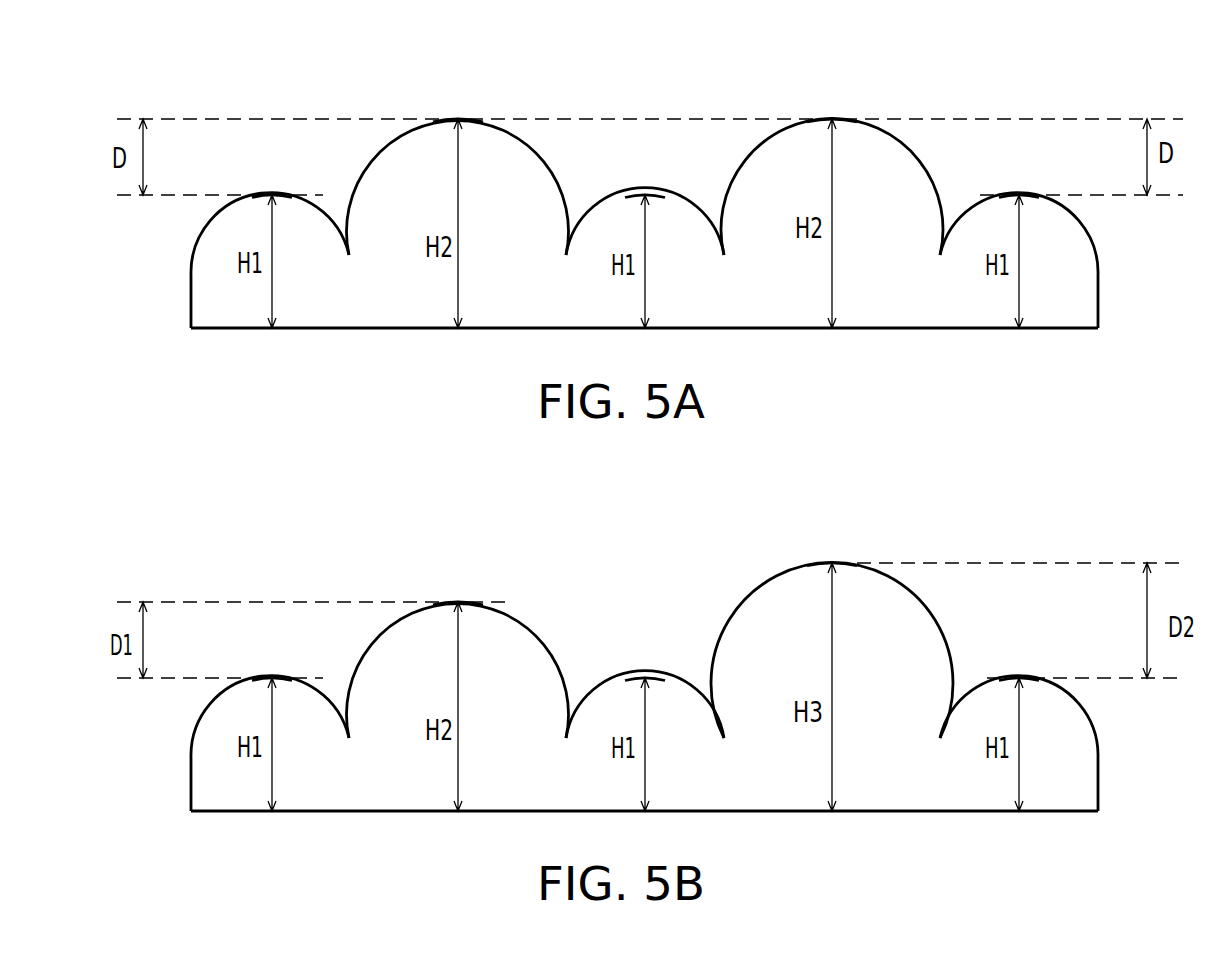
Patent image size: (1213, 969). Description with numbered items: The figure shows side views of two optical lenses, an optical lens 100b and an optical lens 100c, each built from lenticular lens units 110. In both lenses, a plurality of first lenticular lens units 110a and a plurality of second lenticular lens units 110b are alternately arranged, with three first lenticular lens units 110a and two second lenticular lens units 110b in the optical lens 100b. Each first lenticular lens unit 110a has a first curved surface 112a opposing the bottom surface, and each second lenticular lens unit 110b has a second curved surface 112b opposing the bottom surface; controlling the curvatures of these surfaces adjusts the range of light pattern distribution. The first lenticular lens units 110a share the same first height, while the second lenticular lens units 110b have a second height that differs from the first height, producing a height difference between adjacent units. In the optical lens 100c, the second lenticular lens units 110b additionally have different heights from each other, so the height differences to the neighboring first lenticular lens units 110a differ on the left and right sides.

In FIG. 5A, the optical lens 100b is at (1025, 353).
In FIG. 5B, the optical lens 100c is at (1025, 835).
In FIG. 5A, the lenticular lens units 110 is at (666, 176).
In FIG. 5B, the lenticular lens units 110 is at (666, 627).
In FIG. 5A, the first lenticular lens unit 110a is at (298, 220).
In FIG. 5B, the first lenticular lens unit 110a is at (298, 703).
In FIG. 5A, the second lenticular lens unit 110b is at (503, 147).
In FIG. 5B, the second lenticular lens unit 110b is at (503, 630).
In FIG. 5A, the first curved surface 112a is at (217, 201).
In FIG. 5B, the first curved surface 112a is at (217, 684).
In FIG. 5A, the second curved surface 112b is at (380, 145).
In FIG. 5B, the second curved surface 112b is at (380, 628).